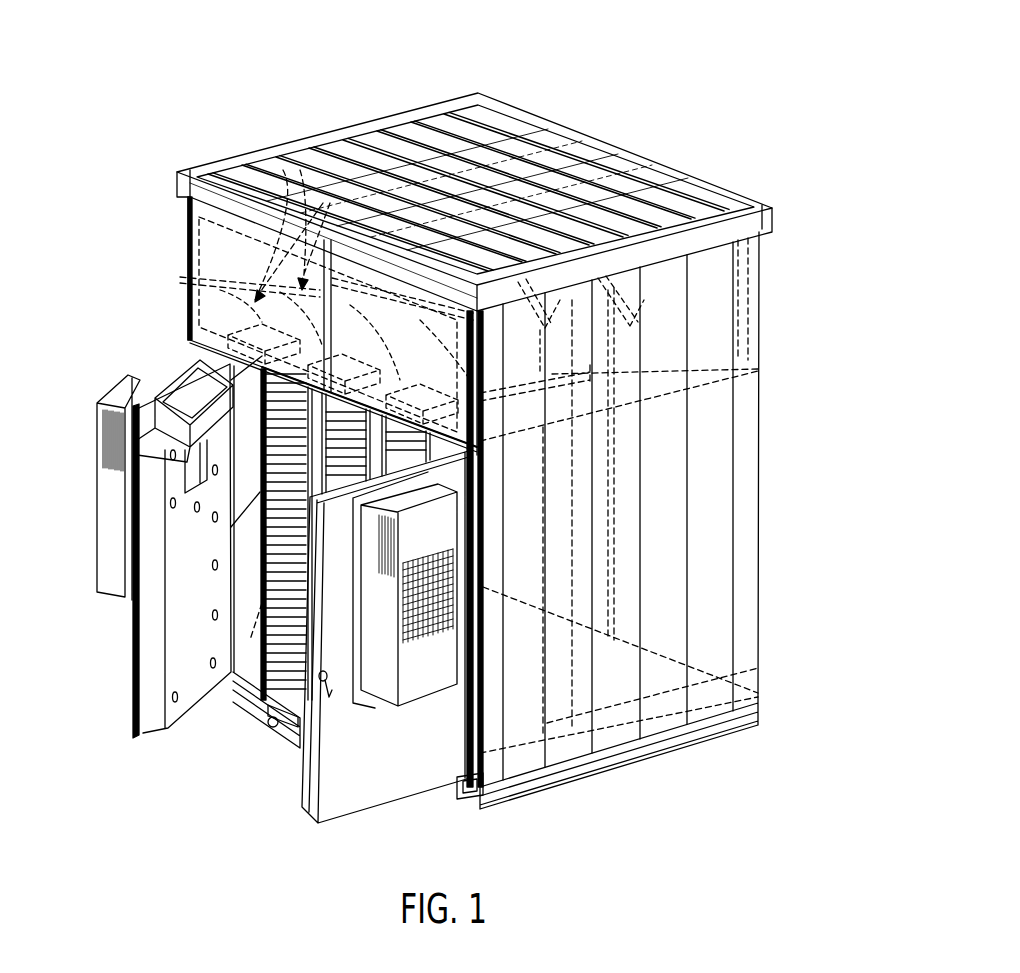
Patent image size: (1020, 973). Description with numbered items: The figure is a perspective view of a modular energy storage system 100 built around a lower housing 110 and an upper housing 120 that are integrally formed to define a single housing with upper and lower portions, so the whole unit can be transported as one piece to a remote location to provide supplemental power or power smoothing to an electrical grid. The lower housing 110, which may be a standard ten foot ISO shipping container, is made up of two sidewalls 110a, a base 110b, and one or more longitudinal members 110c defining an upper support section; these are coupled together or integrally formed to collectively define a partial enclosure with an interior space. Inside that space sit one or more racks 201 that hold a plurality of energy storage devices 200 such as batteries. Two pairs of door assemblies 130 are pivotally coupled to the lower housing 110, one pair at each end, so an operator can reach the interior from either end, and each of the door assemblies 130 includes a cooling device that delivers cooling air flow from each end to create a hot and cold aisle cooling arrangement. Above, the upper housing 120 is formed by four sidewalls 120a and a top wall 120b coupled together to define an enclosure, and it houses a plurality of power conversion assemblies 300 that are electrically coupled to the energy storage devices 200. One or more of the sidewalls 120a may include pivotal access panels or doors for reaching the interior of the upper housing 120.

The modular energy storage system 100 is at (633, 33).
The lower housing 110 is at (765, 488).
The sidewalls 110a is at (190, 349).
The base 110b is at (268, 677).
The longitudinal members 110c is at (200, 281).
The upper housing 120 is at (562, 115).
The sidewalls 120a is at (773, 258).
The top wall 120b is at (252, 162).
The door assemblies 130 is at (152, 740).
The energy storage devices 200 is at (262, 603).
The racks 201 is at (256, 520).
The power conversion assemblies 300 is at (300, 170).